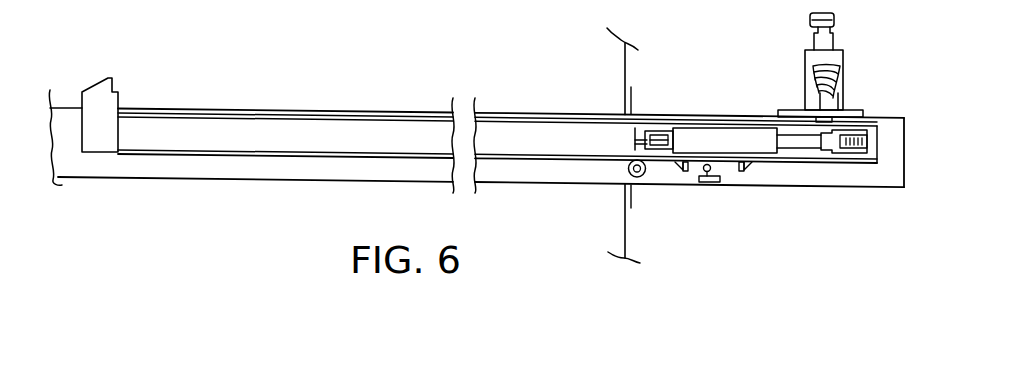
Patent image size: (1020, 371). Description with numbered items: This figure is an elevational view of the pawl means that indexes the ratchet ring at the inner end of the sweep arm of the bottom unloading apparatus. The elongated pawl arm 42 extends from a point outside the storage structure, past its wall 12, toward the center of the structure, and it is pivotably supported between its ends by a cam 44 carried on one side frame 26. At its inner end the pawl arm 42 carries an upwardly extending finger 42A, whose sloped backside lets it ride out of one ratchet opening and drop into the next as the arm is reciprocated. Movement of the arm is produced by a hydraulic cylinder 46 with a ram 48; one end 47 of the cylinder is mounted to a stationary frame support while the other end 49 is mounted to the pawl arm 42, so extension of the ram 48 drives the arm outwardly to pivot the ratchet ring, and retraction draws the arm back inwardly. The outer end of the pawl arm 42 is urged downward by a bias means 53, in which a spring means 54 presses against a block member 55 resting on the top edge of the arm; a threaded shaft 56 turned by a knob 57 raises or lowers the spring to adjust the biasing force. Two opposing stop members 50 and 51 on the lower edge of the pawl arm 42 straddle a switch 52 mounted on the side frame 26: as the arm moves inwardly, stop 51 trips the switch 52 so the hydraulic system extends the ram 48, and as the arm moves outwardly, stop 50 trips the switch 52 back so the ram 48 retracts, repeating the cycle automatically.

The wall 12 is at (622, 237).
The side frame 26 is at (147, 172).
The pawl arm 42 is at (175, 122).
The finger 42A is at (112, 80).
The cam 44 is at (637, 178).
The hydraulic cylinder 46 is at (688, 128).
The end of cylinder 47 is at (656, 130).
The ram 48 is at (800, 142).
The end of cylinder 49 is at (853, 148).
The stop member 50 is at (679, 172).
The stop member 51 is at (748, 172).
The switch 52 is at (712, 182).
The bias means 53 is at (838, 66).
The spring means 54 is at (842, 79).
The block member 55 is at (834, 100).
The threaded shaft 56 is at (816, 30).
The knob 57 is at (811, 17).